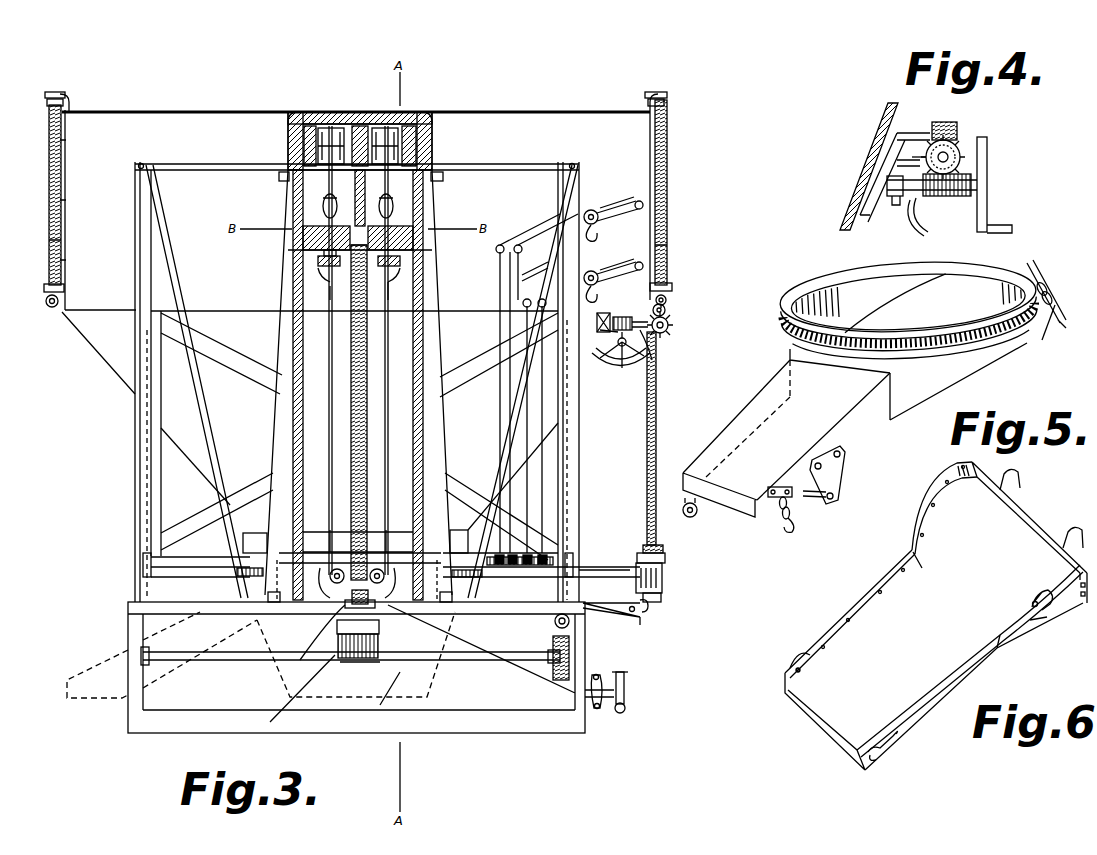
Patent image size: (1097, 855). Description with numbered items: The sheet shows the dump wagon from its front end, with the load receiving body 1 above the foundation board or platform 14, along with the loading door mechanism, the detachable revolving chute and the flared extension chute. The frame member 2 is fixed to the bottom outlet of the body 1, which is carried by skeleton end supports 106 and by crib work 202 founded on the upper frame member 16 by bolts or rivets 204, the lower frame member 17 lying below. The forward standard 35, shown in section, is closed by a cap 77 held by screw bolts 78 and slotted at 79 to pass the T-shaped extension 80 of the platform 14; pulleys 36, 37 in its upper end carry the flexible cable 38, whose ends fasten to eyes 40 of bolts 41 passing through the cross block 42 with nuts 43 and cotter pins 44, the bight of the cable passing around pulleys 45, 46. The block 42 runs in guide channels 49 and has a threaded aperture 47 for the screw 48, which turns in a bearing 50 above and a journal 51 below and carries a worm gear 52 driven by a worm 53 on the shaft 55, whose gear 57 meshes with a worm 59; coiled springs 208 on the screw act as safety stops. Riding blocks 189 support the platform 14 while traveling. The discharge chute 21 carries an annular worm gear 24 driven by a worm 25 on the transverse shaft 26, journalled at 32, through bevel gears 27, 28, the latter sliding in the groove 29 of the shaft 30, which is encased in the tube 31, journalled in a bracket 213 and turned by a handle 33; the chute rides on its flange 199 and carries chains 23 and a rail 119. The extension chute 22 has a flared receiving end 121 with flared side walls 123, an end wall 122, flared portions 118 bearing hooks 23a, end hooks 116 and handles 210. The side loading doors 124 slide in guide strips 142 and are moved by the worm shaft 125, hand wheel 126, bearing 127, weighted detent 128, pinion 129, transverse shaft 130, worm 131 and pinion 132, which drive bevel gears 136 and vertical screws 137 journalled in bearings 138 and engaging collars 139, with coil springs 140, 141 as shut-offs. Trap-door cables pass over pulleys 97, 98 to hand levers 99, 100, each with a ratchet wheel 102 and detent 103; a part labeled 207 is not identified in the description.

In FIG. 3, the load receiving body 1 is at (120, 377).
In FIG. 4, the load receiving body 1 is at (886, 131).
In FIG. 3, the frame member 2 is at (260, 530).
In FIG. 3, the foundation board or platform 14 is at (184, 570).
In FIG. 3, the upper frame member 16 is at (585, 612).
In FIG. 3, the lower frame member 17 is at (135, 718).
In FIG. 3, the discharge chute 21 is at (626, 700).
In FIG. 5, the discharge chute 21 is at (748, 398).
In FIG. 6, the extension chute 22 is at (934, 660).
In FIG. 3, the chains 23 is at (628, 712).
In FIG. 5, the chains 23 is at (782, 534).
In FIG. 6, the hooks 23a is at (1038, 622).
In FIG. 5, the annular rack bar or worm gear 24 is at (784, 331).
In FIG. 5, the worm 25 is at (1052, 318).
In FIG. 3, the transverse shaft 26 is at (616, 570).
In FIG. 5, the transverse shaft 26 is at (1034, 264).
In FIG. 3, the bevel gear 27 is at (636, 583).
In FIG. 3, the bevel gear 28 is at (660, 558).
In FIG. 3, the longitudinally extending groove 29 is at (660, 548).
In FIG. 3, the rotatable shaft 30 is at (661, 597).
In FIG. 3, the supporting tube or casing 31 is at (657, 420).
In FIG. 3, the journal 32 is at (146, 572).
In FIG. 3, the operating handle 33 is at (646, 613).
In FIG. 3, the forward standard 35 is at (290, 452).
In FIG. 3, the pulley 36 is at (322, 114).
In FIG. 3, the pulley 37 is at (376, 114).
In FIG. 3, the flexible cable 38 is at (398, 512).
In FIG. 3, the eyes 40 is at (395, 210).
In FIG. 3, the bolts 41 is at (414, 240).
In FIG. 3, the cross piece or block 42 is at (322, 253).
In FIG. 3, the nuts 43 is at (402, 258).
In FIG. 3, the cotter pins 44 is at (395, 276).
In FIG. 3, the pulley 45 is at (320, 620).
In FIG. 3, the pulley 46 is at (390, 600).
In FIG. 3, the threaded aperture 47 is at (392, 292).
In FIG. 3, the screw 48 is at (380, 492).
In FIG. 3, the guide channels 49 is at (300, 496).
In FIG. 3, the bearing 50 is at (420, 147).
In FIG. 3, the journal 51 is at (350, 612).
In FIG. 3, the worm gear 52 is at (338, 660).
In FIG. 3, the worm 53 is at (380, 650).
In FIG. 3, the transversely extending shaft 55 is at (258, 664).
In FIG. 3, the gear 57 is at (558, 680).
In FIG. 3, the worm 59 is at (552, 623).
In FIG. 3, the cap 77 is at (432, 130).
In FIG. 3, the screw bolts 78 is at (279, 178).
In FIG. 3, the slot 79 is at (300, 432).
In FIG. 3, the T-shaped extension 80 is at (408, 550).
In FIG. 3, the pulley 97 is at (520, 284).
In FIG. 3, the pulley 98 is at (500, 245).
In FIG. 3, the hand-operated lever 99 is at (630, 262).
In FIG. 3, the hand-operated lever 100 is at (634, 197).
In FIG. 3, the ratchet wheel 102 is at (594, 208).
In FIG. 3, the detent 103 is at (598, 236).
In FIG. 3, the skeleton end support 106 is at (157, 503).
In FIG. 6, the end hooks 116 is at (1065, 532).
In FIG. 6, the flared portions 118 is at (1045, 620).
In FIG. 3, the rail 119 is at (597, 712).
In FIG. 5, the rail 119 is at (829, 507).
In FIG. 6, the intake or receiving end 121 is at (955, 515).
In FIG. 6, the end wall 122 is at (1018, 520).
In FIG. 6, the flared side walls 123 is at (1060, 587).
In FIG. 3, the side loading doors 124 is at (48, 212).
In FIG. 3, the worm shaft 125 is at (598, 364).
In FIG. 4, the worm shaft 125 is at (950, 196).
In FIG. 3, the hand wheel 126 is at (600, 366).
In FIG. 4, the hand wheel 126 is at (988, 210).
In FIG. 4, the bearing 127 is at (862, 226).
In FIG. 3, the weighted detent 128 is at (653, 372).
In FIG. 4, the weighted detent 128 is at (924, 237).
In FIG. 3, the pinion 129 is at (590, 350).
In FIG. 4, the pinion 129 is at (978, 180).
In FIG. 3, the transverse shaft 130 is at (669, 327).
In FIG. 4, the transverse shaft 130 is at (962, 162).
In FIG. 3, the worm 131 is at (660, 336).
In FIG. 4, the worm 131 is at (965, 150).
In FIG. 3, the pinion 132 is at (667, 312).
In FIG. 4, the pinion 132 is at (934, 122).
In FIG. 3, the bevel gears 136 is at (45, 303).
In FIG. 3, the vertical screws 137 is at (48, 241).
In FIG. 3, the bearings 138 is at (45, 101).
In FIG. 3, the threaded socket or collar 139 is at (46, 108).
In FIG. 3, the coil spring 140 is at (672, 101).
In FIG. 3, the coil springs 141 is at (700, 281).
In FIG. 3, the guide strips 142 is at (56, 145).
In FIG. 3, the riding blocks 189 is at (288, 567).
In FIG. 5, the flange 199 is at (985, 350).
In FIG. 3, the crib work 202 is at (226, 176).
In FIG. 3, the bolts or rivets 204 is at (228, 585).
In FIG. 3, the bracket 207 is at (296, 300).
In FIG. 3, the coiled springs 208 is at (406, 200).
In FIG. 6, the handles 210 is at (797, 653).
In FIG. 3, the bracket 213 is at (620, 620).